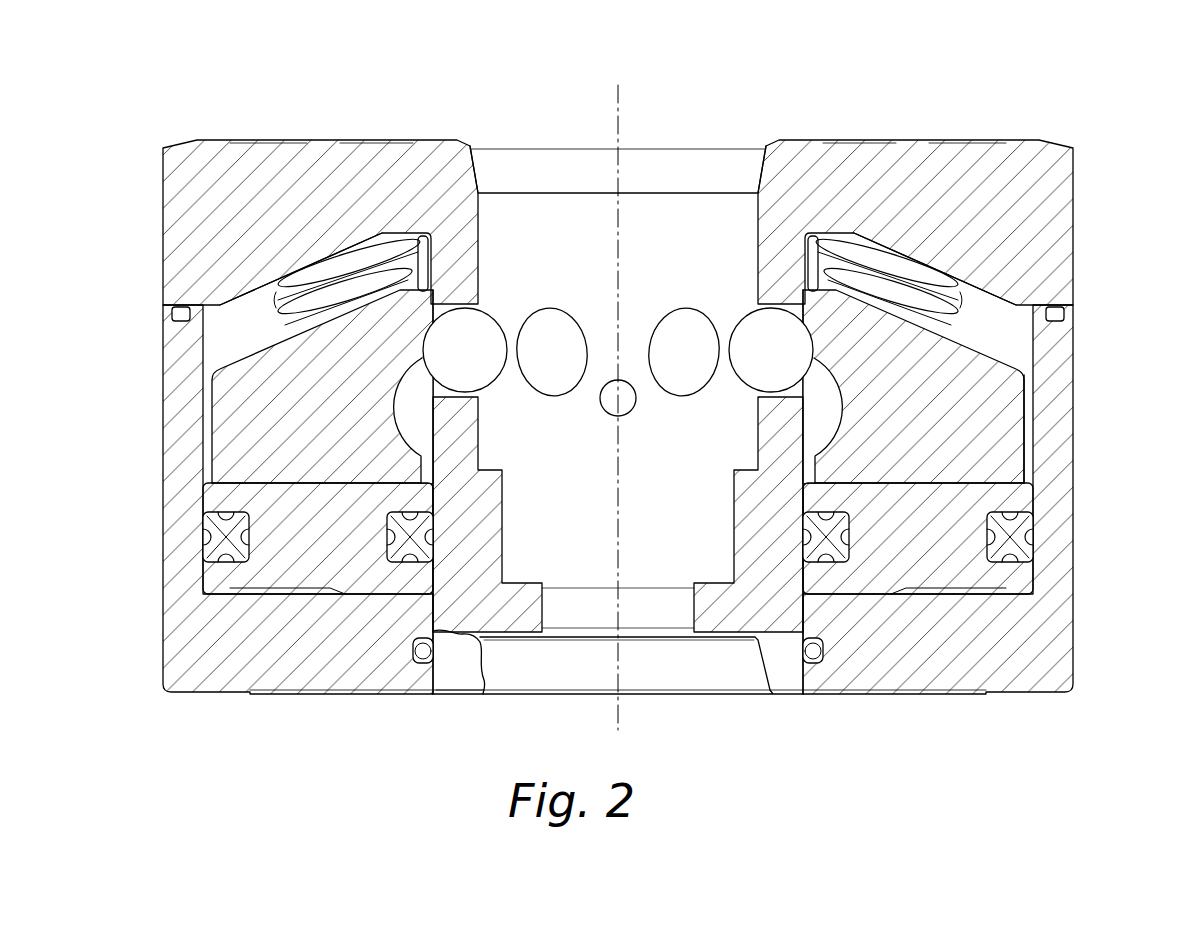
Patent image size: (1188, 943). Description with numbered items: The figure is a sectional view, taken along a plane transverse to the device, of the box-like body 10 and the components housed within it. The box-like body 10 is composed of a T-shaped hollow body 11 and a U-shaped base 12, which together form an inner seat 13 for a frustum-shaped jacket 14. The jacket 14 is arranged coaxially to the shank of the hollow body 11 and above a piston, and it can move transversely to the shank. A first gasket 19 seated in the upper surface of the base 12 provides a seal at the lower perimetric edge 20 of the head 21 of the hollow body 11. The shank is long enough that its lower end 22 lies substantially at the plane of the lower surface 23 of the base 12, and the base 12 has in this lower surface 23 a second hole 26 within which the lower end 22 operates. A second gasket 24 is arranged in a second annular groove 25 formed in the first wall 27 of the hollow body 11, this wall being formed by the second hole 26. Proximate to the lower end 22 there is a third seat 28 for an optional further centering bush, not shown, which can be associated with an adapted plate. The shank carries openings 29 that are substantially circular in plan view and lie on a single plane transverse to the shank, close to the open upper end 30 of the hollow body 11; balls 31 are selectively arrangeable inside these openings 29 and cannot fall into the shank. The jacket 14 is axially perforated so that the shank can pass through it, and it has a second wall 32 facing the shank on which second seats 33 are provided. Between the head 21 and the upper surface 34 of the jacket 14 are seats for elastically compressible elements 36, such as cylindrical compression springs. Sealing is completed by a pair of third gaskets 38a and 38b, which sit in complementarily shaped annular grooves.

The box-like body 10 is at (627, 426).
The T-shaped hollow body 11 is at (162, 146).
The U-shaped base 12 is at (176, 706).
The inner seat 13 is at (1018, 343).
The frustum-shaped jacket 14 is at (1024, 405).
The first gasket 19 is at (184, 317).
The lower perimetric edge 20 is at (233, 304).
The head 21 is at (1046, 195).
The lower end 22 is at (780, 700).
The lower surface 23 is at (1022, 697).
The second gasket 24 is at (420, 656).
The second annular groove 25 is at (818, 665).
The second hole 26 is at (460, 672).
The first wall 27 is at (442, 700).
The third seat 28 is at (699, 697).
The openings 29 is at (573, 312).
The open upper end 30 is at (521, 136).
The balls 31 is at (543, 377).
The second wall 32 is at (801, 468).
The second seats 33 is at (410, 420).
The upper surface 34 is at (264, 343).
The elastically compressible elements 36 is at (356, 270).
The third gasket 38a is at (216, 540).
The third gasket 38b is at (425, 540).